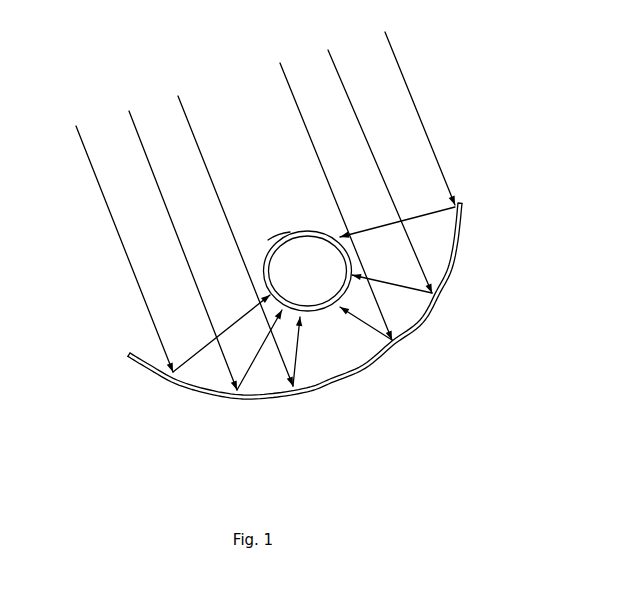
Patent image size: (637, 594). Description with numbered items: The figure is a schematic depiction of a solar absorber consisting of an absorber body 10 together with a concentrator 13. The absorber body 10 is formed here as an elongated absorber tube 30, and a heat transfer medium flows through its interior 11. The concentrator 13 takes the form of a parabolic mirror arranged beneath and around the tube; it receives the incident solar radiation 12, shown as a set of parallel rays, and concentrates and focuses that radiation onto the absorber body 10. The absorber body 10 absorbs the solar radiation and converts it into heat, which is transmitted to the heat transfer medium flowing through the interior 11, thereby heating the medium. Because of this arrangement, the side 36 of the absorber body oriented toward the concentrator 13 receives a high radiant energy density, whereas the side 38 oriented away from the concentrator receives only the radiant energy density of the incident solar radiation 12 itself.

The absorber body 10 is at (266, 161).
The interior 11 is at (308, 271).
The incident solar radiation 12 is at (425, 130).
The concentrator 13 is at (452, 276).
The absorber tube 30 is at (328, 233).
The side oriented toward the concentrator 36 is at (317, 315).
The side oriented away from the concentrator 38 is at (268, 235).